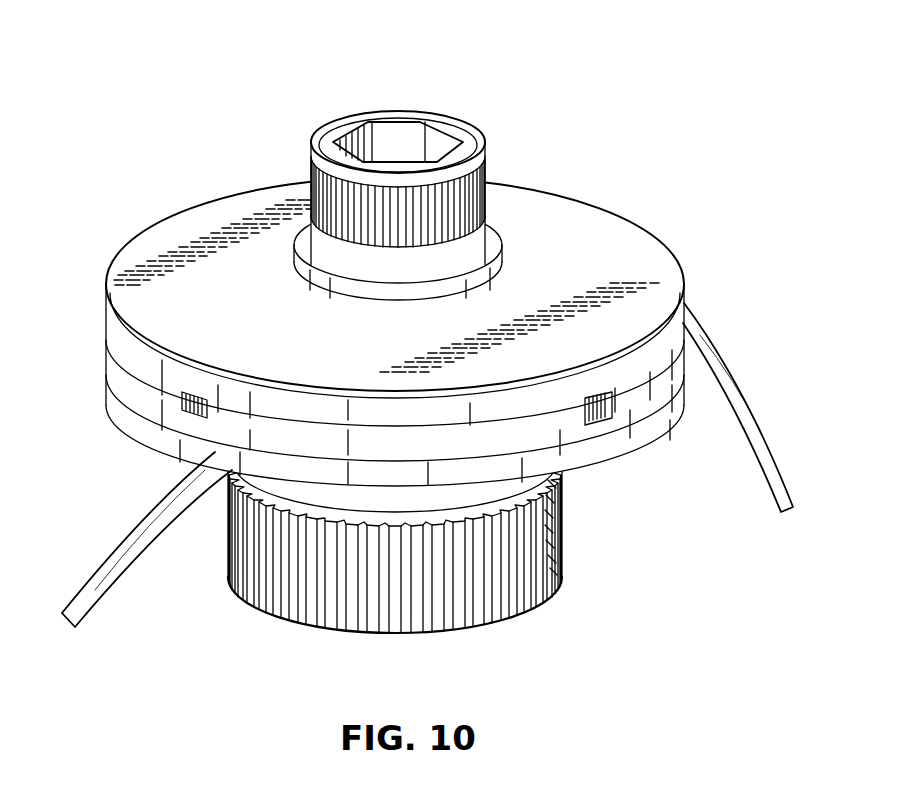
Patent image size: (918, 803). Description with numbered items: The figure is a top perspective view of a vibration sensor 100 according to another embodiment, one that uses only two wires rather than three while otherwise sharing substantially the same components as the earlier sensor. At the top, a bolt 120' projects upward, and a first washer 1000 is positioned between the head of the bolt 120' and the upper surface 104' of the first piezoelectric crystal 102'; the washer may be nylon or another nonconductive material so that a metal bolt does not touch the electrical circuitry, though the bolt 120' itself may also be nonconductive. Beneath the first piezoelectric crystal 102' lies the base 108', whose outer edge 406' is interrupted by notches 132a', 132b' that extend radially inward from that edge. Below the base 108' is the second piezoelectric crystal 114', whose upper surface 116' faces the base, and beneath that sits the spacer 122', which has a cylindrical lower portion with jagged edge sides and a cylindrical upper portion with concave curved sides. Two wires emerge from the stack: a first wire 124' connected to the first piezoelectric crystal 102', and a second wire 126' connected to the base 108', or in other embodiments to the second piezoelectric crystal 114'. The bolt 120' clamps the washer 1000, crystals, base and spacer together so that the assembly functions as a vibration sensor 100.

The vibration sensor 100 is at (271, 39).
The bolt 120' is at (423, 176).
The first washer 1000 is at (488, 282).
The upper surface 104' is at (416, 271).
The first piezoelectric crystal 102' is at (440, 284).
The first wire 124' is at (754, 407).
The base 108' is at (356, 370).
The second piezoelectric crystal 114' is at (360, 442).
The notch 132a' is at (132, 442).
The notch 132b' is at (660, 451).
The upper surface 116' is at (421, 456).
The outer edge 406' is at (472, 495).
The spacer 122' is at (428, 552).
The second wire 126' is at (136, 539).